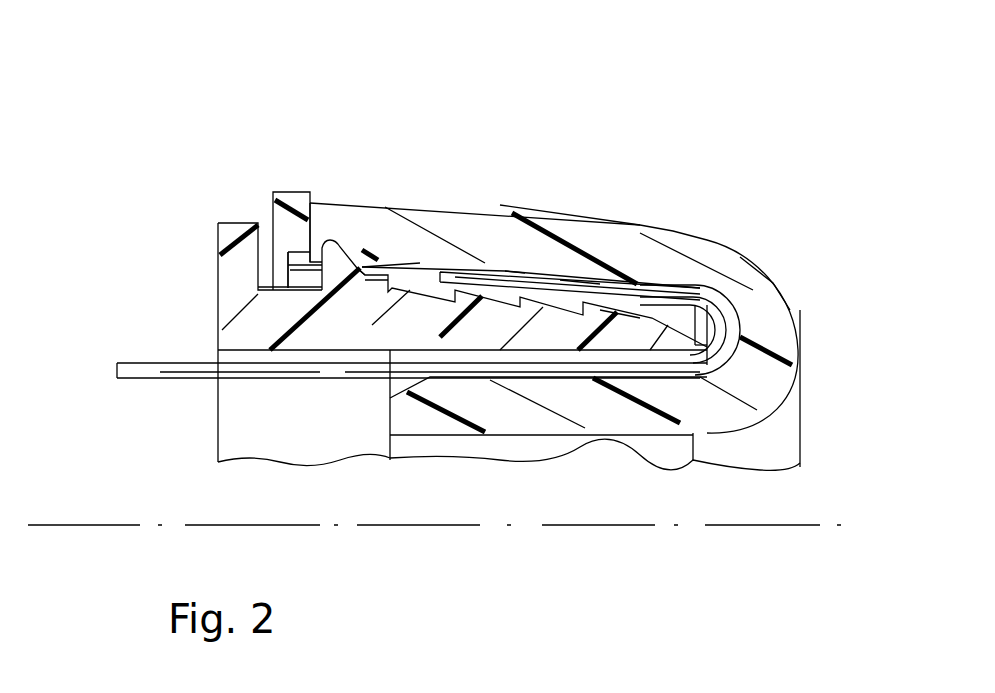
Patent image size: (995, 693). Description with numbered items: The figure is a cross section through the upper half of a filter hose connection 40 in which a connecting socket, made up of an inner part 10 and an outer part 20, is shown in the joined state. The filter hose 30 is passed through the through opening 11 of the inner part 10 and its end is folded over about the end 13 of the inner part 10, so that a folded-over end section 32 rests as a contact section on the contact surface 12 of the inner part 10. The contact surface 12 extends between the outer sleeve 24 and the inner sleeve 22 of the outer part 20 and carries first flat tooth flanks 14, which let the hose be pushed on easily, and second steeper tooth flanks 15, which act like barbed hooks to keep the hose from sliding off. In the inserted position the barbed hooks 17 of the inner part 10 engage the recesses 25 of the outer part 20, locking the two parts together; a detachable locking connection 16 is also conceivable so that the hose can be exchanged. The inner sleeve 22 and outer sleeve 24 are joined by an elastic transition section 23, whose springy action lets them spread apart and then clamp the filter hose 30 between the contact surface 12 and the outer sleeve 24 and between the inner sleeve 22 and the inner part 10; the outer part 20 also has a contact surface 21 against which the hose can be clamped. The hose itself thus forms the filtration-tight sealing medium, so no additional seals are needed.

The inner part 10 is at (465, 330).
The through opening 11 is at (343, 408).
The contact surface 12 is at (505, 280).
The end 13 is at (668, 323).
The first flat tooth flanks 14 is at (627, 322).
The second steeper tooth flanks 15 is at (580, 288).
The detachable locking connection 16 is at (300, 243).
The barbed hooks 17 is at (352, 268).
The outer part 20 is at (749, 204).
The contact surface 21 is at (428, 262).
The inner sleeve 22 is at (590, 418).
The elastic transition section 23 is at (753, 290).
The outer sleeve 24 is at (575, 230).
The recesses 25 is at (335, 223).
The filter hose 30 is at (178, 380).
The folded-over end section 32 is at (525, 273).
The filter hose connection 40 is at (293, 138).